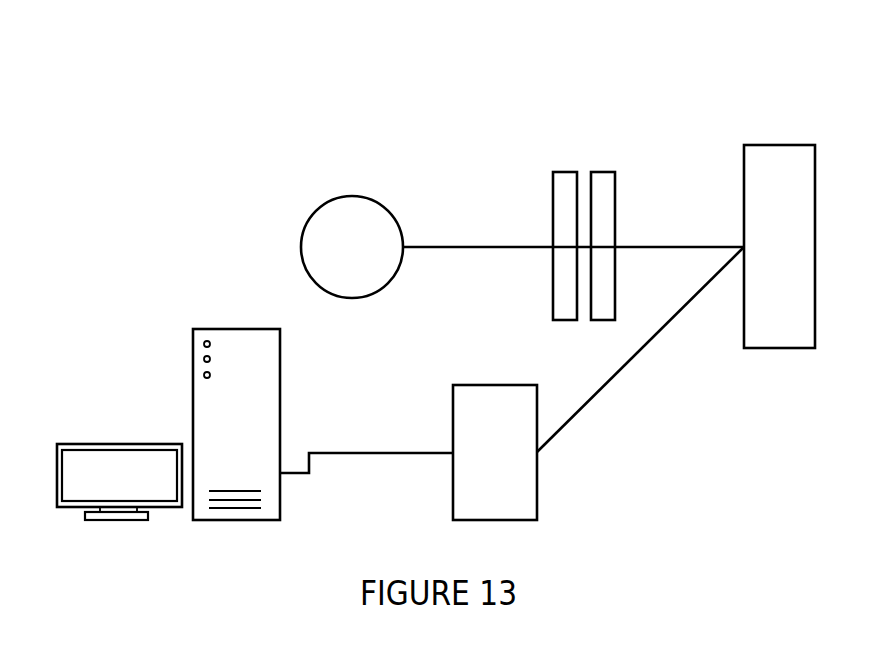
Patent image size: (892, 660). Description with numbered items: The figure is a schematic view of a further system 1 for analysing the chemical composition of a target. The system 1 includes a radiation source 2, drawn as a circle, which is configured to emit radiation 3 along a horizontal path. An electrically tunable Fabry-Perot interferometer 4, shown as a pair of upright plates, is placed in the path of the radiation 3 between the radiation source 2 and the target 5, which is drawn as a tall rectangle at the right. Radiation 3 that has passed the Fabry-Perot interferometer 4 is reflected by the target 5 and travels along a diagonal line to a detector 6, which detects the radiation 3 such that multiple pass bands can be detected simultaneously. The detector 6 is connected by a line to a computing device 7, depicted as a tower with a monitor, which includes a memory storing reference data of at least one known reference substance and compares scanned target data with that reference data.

The system 1 is at (246, 147).
The radiation source 2 is at (360, 196).
The radiation 3 is at (452, 246).
The electrically tunable Fabry-Perot interferometer 4 is at (567, 170).
The target 5 is at (778, 144).
The detector 6 is at (452, 420).
The computing device 7 is at (193, 385).